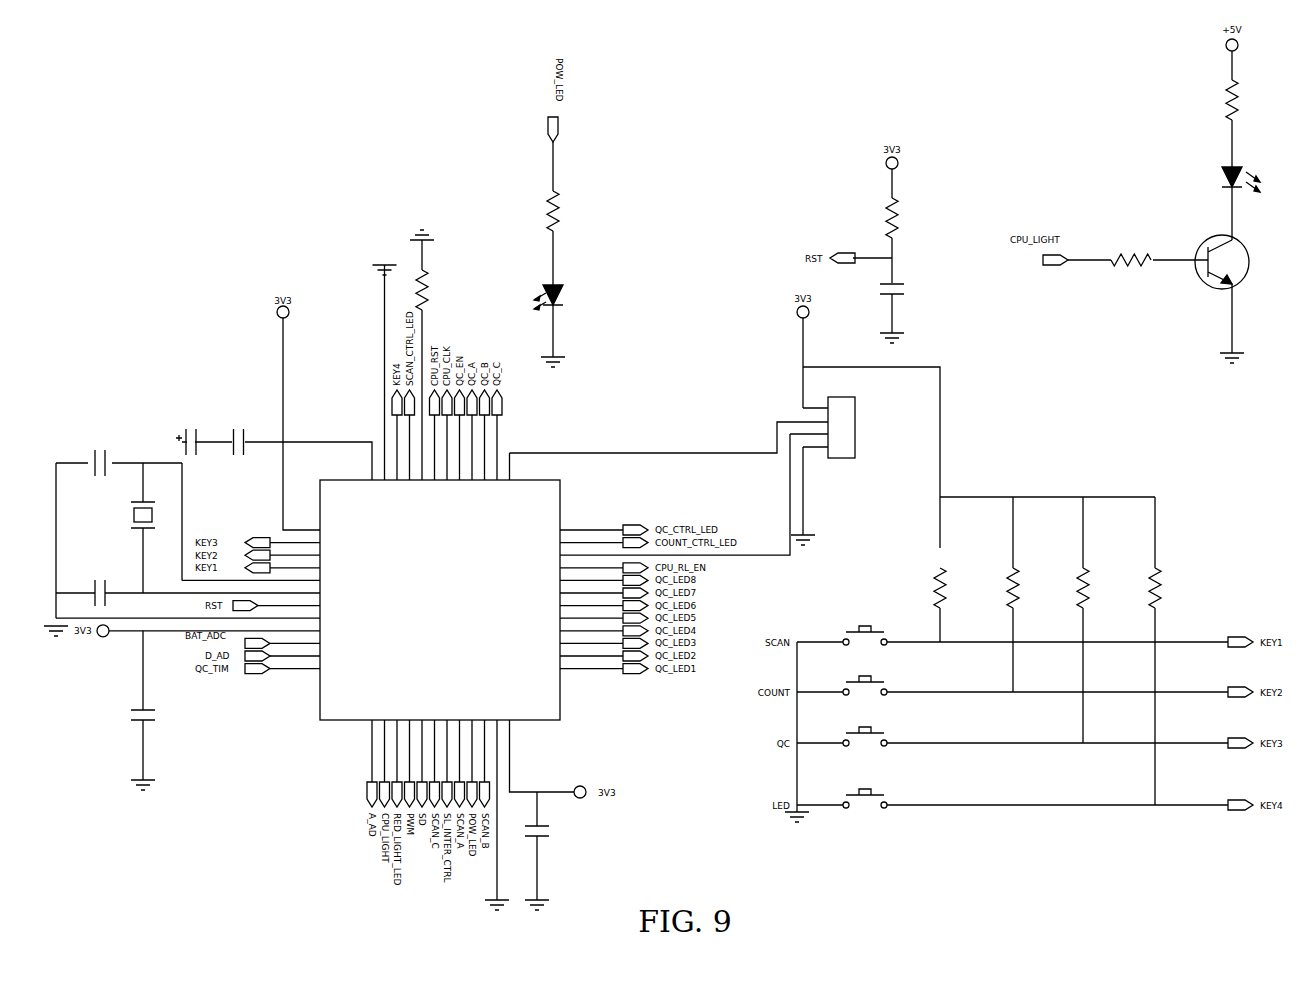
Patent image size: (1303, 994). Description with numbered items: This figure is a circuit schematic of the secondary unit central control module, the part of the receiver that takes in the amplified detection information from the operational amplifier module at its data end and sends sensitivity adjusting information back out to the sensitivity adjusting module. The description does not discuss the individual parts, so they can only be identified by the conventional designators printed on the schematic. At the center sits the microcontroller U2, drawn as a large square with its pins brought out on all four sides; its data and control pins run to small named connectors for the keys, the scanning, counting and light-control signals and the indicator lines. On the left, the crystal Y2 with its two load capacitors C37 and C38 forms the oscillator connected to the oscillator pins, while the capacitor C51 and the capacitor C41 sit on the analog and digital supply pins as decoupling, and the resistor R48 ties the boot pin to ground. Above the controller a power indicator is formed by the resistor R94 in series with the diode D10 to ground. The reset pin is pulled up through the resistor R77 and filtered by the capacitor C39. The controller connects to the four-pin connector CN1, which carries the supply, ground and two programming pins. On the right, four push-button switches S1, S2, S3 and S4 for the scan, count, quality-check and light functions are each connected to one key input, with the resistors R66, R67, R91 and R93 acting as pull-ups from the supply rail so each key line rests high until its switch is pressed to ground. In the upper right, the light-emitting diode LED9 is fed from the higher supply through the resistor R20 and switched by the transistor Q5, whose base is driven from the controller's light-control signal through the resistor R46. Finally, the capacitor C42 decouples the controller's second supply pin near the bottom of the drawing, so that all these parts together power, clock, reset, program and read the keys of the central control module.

The microcontroller CKS32F030C8T6 U2 is at (440, 600).
The capacitor 22pF C37 is at (87, 476).
The capacitor 22pF C38 is at (88, 577).
The crystal 8M Y2 is at (132, 517).
The capacitor 1uF C51 is at (152, 710).
The capacitor 100nF C41 is at (274, 457).
The resistor 10K R48 is at (429, 345).
The resistor 4.7K R94 is at (569, 213).
The LED D10 is at (564, 326).
The resistor 10K R77 is at (908, 226).
The capacitor 100nF C39 is at (910, 311).
The connector CN1 is at (822, 421).
The switch SCAN S1 is at (865, 630).
The switch COUNT S2 is at (865, 680).
The switch QC S3 is at (865, 731).
The switch LED S4 is at (865, 793).
The resistor 100K R66 is at (960, 605).
The resistor 100K R67 is at (1033, 594).
The resistor 100K R91 is at (1103, 620).
The resistor 100K R93 is at (1175, 651).
The resistor 330R R20 is at (1209, 109).
The LED LED9 is at (1219, 203).
The transistor S8050 Q5 is at (1220, 294).
The resistor 10K R46 is at (1109, 245).
The capacitor 100nF C42 is at (558, 851).